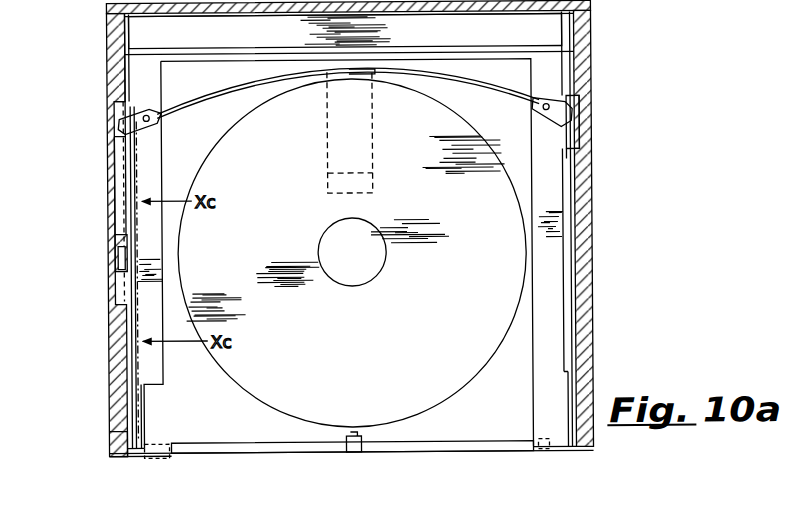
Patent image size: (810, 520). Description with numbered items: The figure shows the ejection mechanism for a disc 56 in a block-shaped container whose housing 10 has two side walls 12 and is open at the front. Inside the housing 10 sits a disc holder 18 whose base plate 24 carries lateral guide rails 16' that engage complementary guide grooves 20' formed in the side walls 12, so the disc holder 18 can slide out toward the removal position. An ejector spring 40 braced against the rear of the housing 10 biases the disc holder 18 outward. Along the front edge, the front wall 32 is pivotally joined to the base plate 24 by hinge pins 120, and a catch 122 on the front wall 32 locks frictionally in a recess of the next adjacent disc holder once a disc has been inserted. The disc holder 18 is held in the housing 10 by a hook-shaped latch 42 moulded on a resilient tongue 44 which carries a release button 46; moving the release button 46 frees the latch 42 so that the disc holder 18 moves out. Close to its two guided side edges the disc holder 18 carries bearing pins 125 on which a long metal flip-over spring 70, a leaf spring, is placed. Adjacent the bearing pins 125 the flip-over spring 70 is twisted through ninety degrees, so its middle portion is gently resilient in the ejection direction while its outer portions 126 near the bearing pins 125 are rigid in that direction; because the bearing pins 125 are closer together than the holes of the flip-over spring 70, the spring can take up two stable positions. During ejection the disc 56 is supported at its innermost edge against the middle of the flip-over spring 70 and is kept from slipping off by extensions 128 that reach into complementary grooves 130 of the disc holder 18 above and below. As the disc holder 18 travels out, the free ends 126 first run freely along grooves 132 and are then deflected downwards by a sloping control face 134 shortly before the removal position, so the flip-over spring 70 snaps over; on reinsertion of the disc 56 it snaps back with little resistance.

The housing 10 is at (105, 22).
The side wall 12 is at (112, 355).
The guide rail 16' is at (331, 230).
The disc holder 18 is at (554, 452).
The guide groove 20' is at (349, 276).
The base plate 24 is at (230, 427).
The front wall 32 is at (313, 452).
The ejector spring 40 is at (385, 27).
The latch 42 is at (110, 428).
The resilient tongue 44 is at (143, 410).
The release button 46 is at (143, 460).
The disc 56 is at (500, 316).
The flip-over spring 70 is at (247, 90).
The hinge pin 120 is at (166, 458).
The catch 122 is at (351, 434).
The bearing pin 125 is at (163, 118).
The outer portion of flip-over spring 126 is at (124, 133).
The extension 128 is at (360, 75).
The groove 130 is at (374, 172).
The groove 132 is at (118, 200).
The control face 134 is at (115, 262).